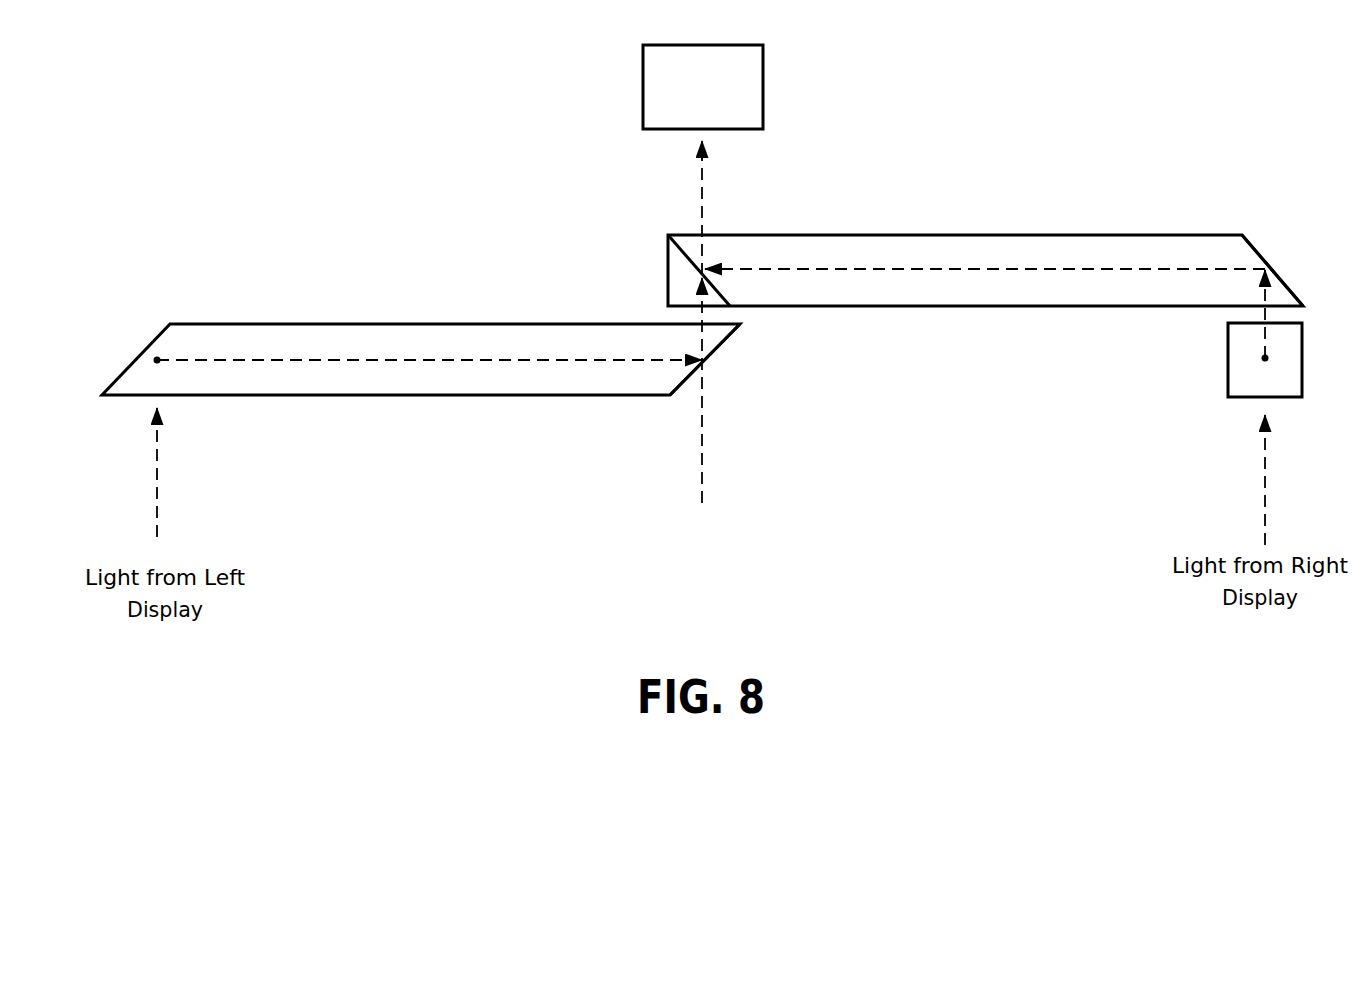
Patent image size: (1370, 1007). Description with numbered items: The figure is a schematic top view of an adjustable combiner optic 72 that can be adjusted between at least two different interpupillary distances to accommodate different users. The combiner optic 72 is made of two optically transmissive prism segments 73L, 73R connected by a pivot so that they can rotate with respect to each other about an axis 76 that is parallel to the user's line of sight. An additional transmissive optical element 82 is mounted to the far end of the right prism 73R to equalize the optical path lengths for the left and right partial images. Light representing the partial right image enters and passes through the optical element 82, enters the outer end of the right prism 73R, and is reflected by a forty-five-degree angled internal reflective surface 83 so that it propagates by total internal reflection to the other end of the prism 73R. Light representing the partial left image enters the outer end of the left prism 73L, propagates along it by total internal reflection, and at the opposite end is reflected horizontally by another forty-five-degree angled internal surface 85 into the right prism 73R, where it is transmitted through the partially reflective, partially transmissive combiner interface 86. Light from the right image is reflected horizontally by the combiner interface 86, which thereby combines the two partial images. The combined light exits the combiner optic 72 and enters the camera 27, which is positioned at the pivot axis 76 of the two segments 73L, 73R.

The camera 27 is at (763, 87).
The adjustable combiner optic 72 is at (598, 198).
The left prism segment 73L is at (370, 323).
The right prism segment 73R is at (997, 235).
The pivot axis 76 is at (703, 462).
The transmissive optical element 82 is at (1228, 373).
The internal reflective surface 83 is at (1252, 257).
The internal reflective surface 85 is at (740, 330).
The combiner interface 86 is at (717, 280).